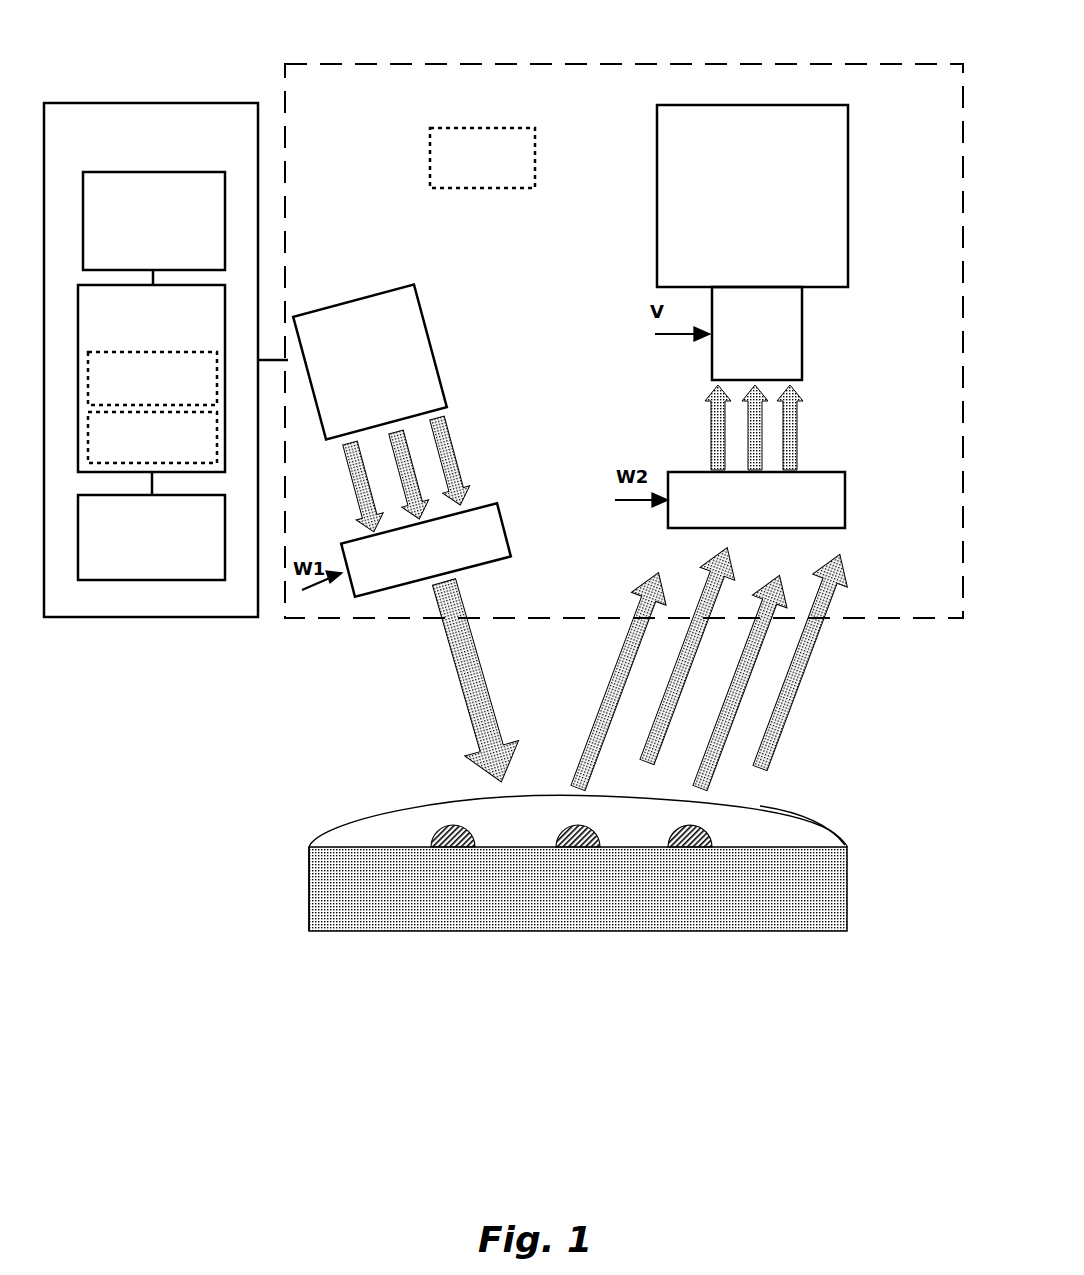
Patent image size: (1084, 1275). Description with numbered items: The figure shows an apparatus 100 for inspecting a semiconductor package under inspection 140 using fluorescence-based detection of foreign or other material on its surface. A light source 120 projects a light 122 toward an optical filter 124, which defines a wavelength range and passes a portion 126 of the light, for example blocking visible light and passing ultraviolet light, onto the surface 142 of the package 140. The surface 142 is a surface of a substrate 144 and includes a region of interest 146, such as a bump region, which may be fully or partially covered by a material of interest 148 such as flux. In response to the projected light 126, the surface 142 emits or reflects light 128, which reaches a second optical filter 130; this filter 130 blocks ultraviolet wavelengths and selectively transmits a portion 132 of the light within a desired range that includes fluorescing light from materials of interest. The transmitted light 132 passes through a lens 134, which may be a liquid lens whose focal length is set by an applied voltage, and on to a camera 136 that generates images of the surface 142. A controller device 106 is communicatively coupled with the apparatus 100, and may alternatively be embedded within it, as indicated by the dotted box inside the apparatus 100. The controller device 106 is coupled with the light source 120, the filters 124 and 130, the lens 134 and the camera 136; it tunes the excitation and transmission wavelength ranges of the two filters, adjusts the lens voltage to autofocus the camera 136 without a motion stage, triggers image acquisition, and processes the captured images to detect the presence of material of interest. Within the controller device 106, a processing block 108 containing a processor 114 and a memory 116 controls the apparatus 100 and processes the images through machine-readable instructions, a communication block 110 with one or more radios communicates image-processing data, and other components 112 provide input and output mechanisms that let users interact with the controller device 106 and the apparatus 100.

The apparatus 100 is at (558, 64).
The controller device 106 is at (289, 360).
The processing block 108 is at (151, 390).
The communication block 110 is at (154, 228).
The other components 112 is at (151, 537).
The processor 114 is at (152, 378).
The memory 116 is at (152, 437).
The light source 120 is at (427, 337).
The light 122 is at (457, 449).
The optical filter 124 is at (505, 532).
The portion of the light 126 is at (487, 678).
The emitted light 128 is at (790, 710).
The optical filter 130 is at (845, 510).
The portion of the emitted light 132 is at (795, 440).
The lens 134 is at (803, 343).
The camera 136 is at (848, 227).
The package under inspection 140 is at (850, 902).
The surface 142 is at (813, 842).
The substrate 144 is at (310, 885).
The region of interest 146 is at (687, 866).
The material of interest 148 is at (360, 817).